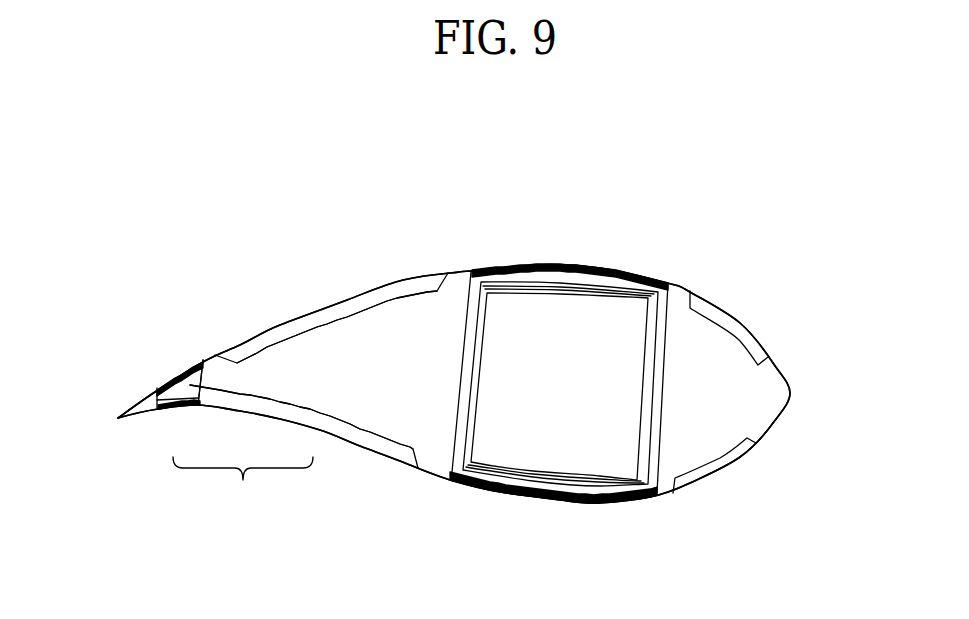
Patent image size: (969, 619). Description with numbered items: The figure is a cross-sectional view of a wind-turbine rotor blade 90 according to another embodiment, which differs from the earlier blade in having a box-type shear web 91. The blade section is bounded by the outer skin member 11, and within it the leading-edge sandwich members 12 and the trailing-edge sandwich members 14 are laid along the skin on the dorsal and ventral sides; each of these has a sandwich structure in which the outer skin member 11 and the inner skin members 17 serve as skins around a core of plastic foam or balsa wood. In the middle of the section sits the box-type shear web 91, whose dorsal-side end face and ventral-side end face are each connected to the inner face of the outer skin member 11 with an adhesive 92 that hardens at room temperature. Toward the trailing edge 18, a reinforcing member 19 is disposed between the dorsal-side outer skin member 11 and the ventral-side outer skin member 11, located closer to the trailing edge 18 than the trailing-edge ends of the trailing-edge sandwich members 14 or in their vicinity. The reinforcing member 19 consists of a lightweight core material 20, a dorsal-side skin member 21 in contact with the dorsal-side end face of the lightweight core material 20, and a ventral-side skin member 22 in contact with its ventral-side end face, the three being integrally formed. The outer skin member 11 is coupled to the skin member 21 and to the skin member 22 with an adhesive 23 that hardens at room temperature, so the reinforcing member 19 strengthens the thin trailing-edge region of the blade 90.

The wind-turbine rotor blade 90 is at (451, 186).
The outer skin member 11 is at (131, 407).
The leading-edge sandwich member 12 is at (723, 320).
The trailing-edge sandwich member 14 is at (373, 304).
The inner skin member 17 is at (333, 416).
The trailing edge 18 is at (121, 418).
The reinforcing member 19 is at (235, 439).
The lightweight core material 20 is at (221, 394).
The dorsal-side skin member 21 is at (203, 362).
The ventral-side skin member 22 is at (212, 405).
The adhesive 23 is at (177, 373).
The box-type shear web 91 is at (644, 384).
The adhesive 92 is at (583, 268).